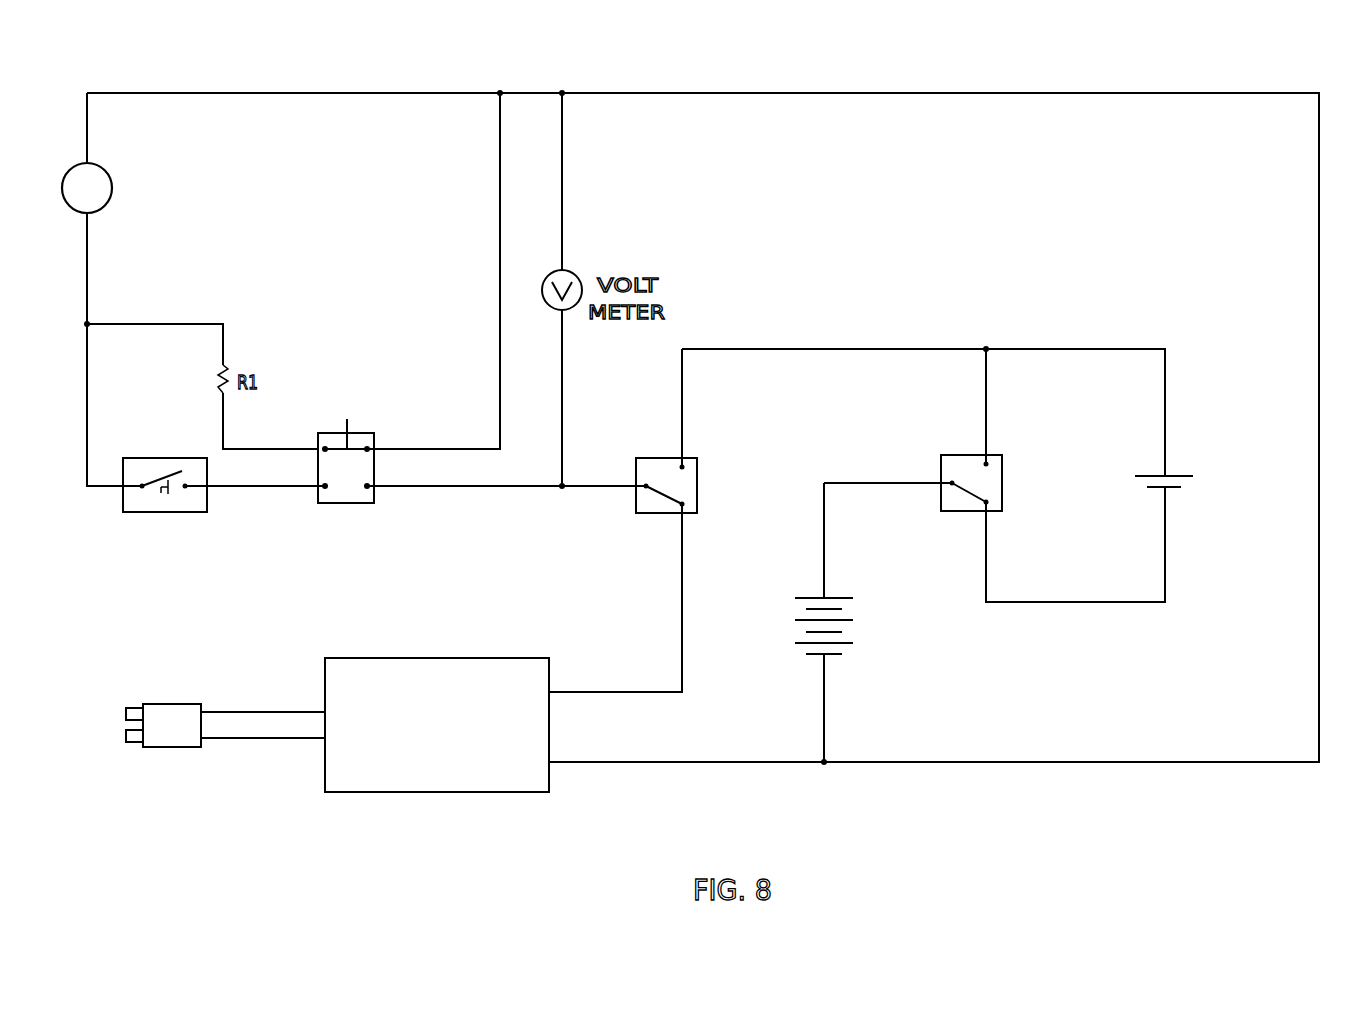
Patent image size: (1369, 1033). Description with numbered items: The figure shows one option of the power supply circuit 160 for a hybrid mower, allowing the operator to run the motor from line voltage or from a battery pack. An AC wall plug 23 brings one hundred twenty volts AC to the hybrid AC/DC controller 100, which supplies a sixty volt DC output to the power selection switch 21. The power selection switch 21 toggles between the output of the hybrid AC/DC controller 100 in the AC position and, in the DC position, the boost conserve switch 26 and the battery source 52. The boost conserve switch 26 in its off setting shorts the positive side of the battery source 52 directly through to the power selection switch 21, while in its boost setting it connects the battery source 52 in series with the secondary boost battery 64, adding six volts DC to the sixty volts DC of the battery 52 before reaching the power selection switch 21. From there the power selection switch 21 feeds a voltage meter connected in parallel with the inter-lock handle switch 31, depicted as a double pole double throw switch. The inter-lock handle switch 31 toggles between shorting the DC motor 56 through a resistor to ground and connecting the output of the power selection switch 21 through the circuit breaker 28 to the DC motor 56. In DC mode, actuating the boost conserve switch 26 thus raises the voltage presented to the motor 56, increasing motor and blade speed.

The power supply circuit 160 is at (1003, 58).
The DC motor 56 is at (108, 188).
The circuit breaker 28 is at (127, 497).
The inter-lock handle switch 31 is at (323, 439).
The power selection switch 21 is at (660, 465).
The boost conserve switch 26 is at (972, 458).
The secondary boost battery 64 is at (1202, 472).
The battery source 52 is at (848, 657).
The AC wall plug 23 is at (173, 742).
The hybrid AC/DC controller 100 is at (412, 785).